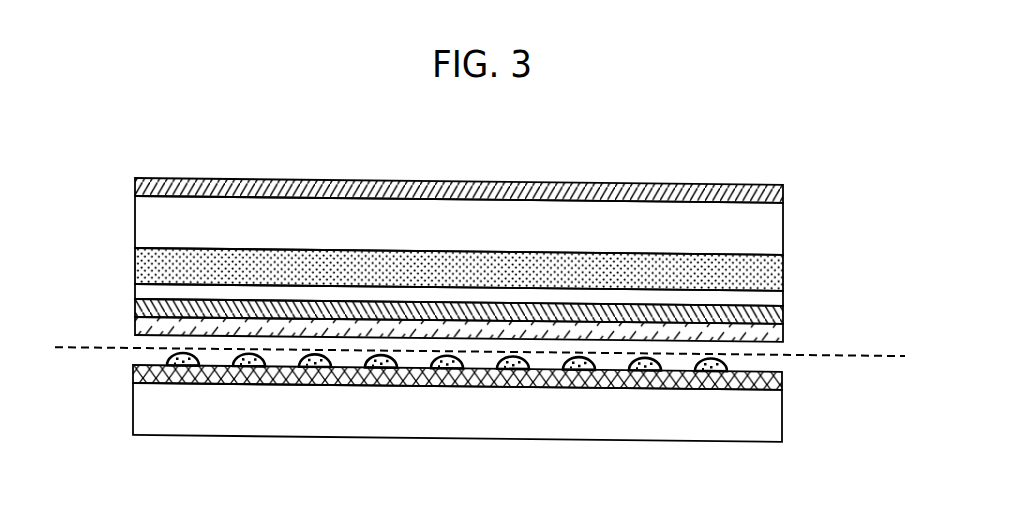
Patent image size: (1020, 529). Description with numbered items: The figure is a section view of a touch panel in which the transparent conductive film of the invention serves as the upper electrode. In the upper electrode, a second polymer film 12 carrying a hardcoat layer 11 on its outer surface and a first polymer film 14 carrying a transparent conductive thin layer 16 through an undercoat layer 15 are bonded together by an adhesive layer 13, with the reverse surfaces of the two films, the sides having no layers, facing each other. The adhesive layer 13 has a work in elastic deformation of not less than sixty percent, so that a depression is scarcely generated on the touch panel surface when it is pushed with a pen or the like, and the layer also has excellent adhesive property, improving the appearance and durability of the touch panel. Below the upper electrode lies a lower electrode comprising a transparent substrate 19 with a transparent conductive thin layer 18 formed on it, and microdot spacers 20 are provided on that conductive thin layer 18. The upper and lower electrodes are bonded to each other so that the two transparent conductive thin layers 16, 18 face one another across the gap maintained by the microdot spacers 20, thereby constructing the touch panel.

The hardcoat layer 11 is at (135, 183).
The second polymer film 12 is at (783, 213).
The adhesive layer 13 is at (135, 263).
The first polymer film 14 is at (783, 289).
The undercoat layer 15 is at (135, 304).
The transparent conductive thin layer 16 is at (783, 326).
The transparent conductive thin layer 18 is at (782, 379).
The transparent substrate 19 is at (133, 411).
The microdot spacers 20 is at (170, 355).